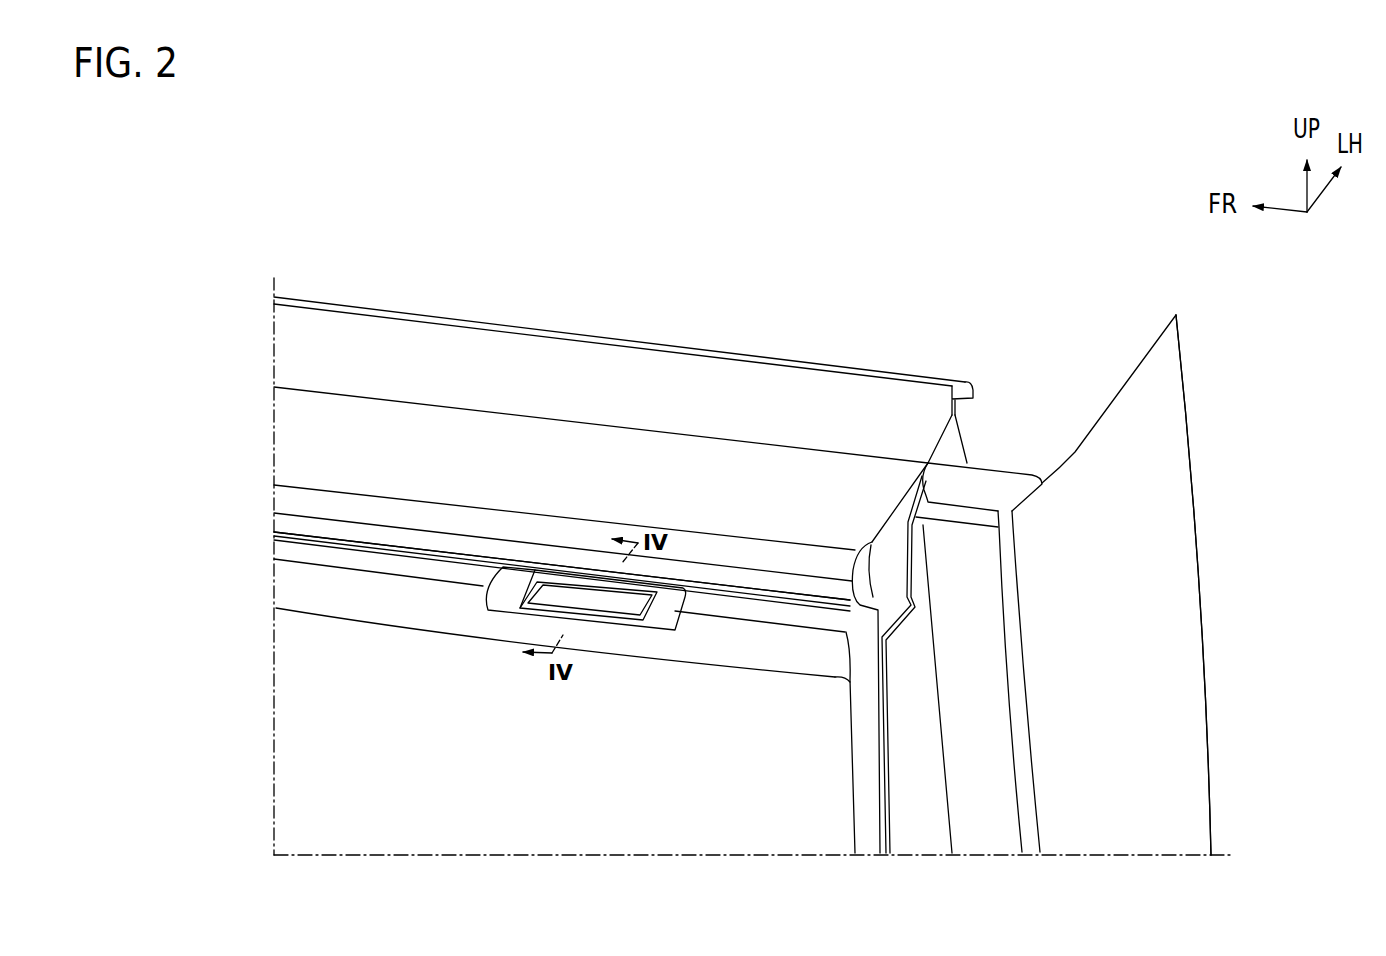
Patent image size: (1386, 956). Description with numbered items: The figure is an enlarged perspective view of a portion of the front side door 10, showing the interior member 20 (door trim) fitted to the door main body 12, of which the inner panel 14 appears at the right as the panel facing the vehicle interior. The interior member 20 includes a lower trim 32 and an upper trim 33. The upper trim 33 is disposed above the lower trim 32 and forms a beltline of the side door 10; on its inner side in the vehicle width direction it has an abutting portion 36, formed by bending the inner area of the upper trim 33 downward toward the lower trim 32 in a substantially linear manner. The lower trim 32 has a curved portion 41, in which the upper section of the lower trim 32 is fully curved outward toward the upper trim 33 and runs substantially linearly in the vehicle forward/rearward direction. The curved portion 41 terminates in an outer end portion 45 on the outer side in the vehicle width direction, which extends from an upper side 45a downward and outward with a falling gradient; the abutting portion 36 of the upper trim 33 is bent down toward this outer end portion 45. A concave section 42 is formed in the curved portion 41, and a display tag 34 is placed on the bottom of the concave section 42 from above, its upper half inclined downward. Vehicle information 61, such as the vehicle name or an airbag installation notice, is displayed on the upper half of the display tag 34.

The front side door 10 is at (266, 249).
The interior member 20 is at (258, 414).
The upper trim 33 is at (856, 390).
The abutting portion 36 is at (325, 522).
The display tag 34 is at (535, 580).
The outer end portion 45 is at (468, 560).
The upper side 45a is at (562, 566).
The curved portion 41 is at (416, 577).
The concave section 42 is at (510, 610).
The vehicle information 61 is at (587, 583).
The lower trim 32 is at (318, 726).
The inner panel 14 is at (1172, 610).
The door main body 12 is at (1239, 585).